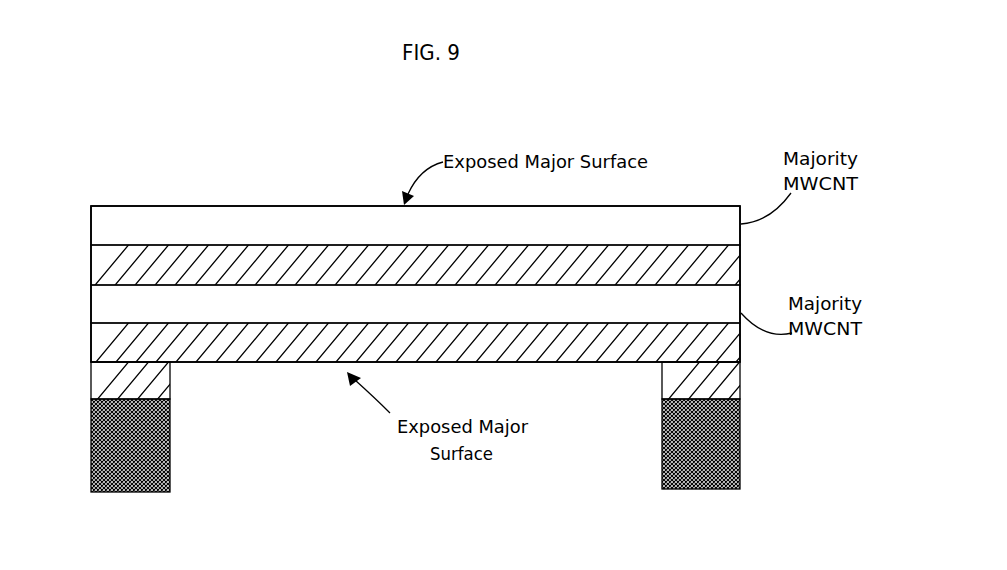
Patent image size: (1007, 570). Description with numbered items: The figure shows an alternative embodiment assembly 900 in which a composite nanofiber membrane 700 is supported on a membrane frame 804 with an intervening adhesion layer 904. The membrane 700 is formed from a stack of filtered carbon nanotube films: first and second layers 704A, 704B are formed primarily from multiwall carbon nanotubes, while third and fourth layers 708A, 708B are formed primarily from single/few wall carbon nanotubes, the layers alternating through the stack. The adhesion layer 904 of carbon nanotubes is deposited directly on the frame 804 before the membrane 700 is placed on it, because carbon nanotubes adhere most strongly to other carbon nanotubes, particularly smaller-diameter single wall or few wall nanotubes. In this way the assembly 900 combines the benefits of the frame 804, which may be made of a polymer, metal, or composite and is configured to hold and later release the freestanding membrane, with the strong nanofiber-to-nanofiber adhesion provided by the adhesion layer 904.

The assembly 900 is at (190, 153).
The composite nanofiber membrane 700 is at (91, 206).
The first layer 704A is at (437, 235).
The third layer 708A is at (741, 270).
The second layer 704B is at (437, 315).
The fourth layer 708B is at (741, 347).
The adhesion layer 904 is at (170, 367).
The membrane frame 804 is at (153, 493).